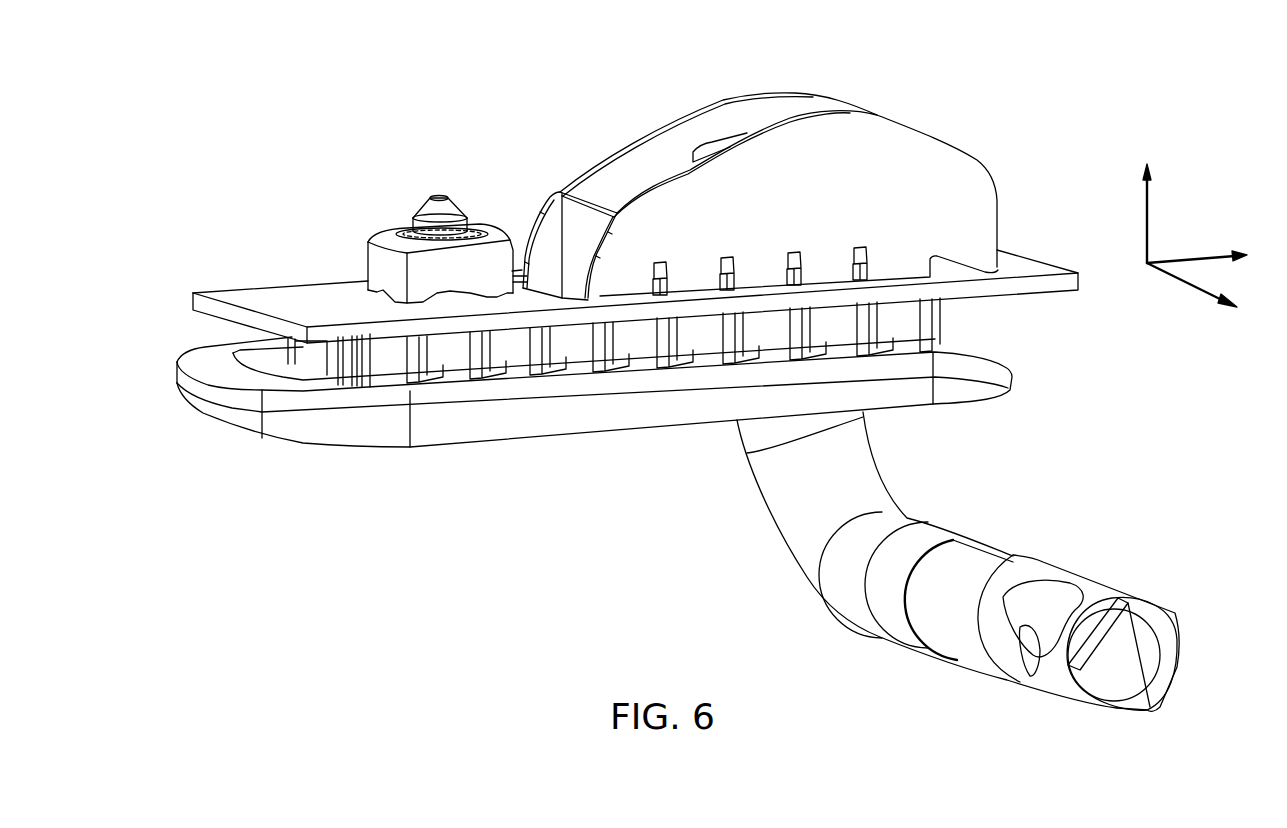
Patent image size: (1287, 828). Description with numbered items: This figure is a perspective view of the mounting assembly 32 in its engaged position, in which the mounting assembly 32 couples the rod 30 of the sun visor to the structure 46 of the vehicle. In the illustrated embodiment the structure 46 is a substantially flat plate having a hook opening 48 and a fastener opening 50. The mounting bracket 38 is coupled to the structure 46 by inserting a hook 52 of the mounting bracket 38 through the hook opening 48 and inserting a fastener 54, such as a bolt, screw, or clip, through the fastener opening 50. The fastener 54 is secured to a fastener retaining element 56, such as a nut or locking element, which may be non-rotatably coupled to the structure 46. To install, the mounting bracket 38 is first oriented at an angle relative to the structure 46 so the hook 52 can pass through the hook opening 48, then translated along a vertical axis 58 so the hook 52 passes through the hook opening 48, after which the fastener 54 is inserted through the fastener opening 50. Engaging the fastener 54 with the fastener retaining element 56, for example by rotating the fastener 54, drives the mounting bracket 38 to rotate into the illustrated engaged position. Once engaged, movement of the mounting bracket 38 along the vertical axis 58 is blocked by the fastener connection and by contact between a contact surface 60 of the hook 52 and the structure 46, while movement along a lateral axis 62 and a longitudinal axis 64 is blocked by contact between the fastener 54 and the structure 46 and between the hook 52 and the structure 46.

The rod 30 is at (958, 527).
The mounting assembly 32 is at (910, 50).
The mounting bracket 38 is at (1007, 388).
The structure 46 is at (1037, 264).
The hook opening 48 is at (690, 257).
The fastener opening 50 is at (423, 278).
The hook 52 is at (965, 163).
The fastener 54 is at (438, 196).
The fastener retaining element 56 is at (503, 235).
The vertical axis 58 is at (1148, 220).
The contact surface 60 is at (990, 268).
The lateral axis 62 is at (1190, 256).
The longitudinal axis 64 is at (1183, 283).